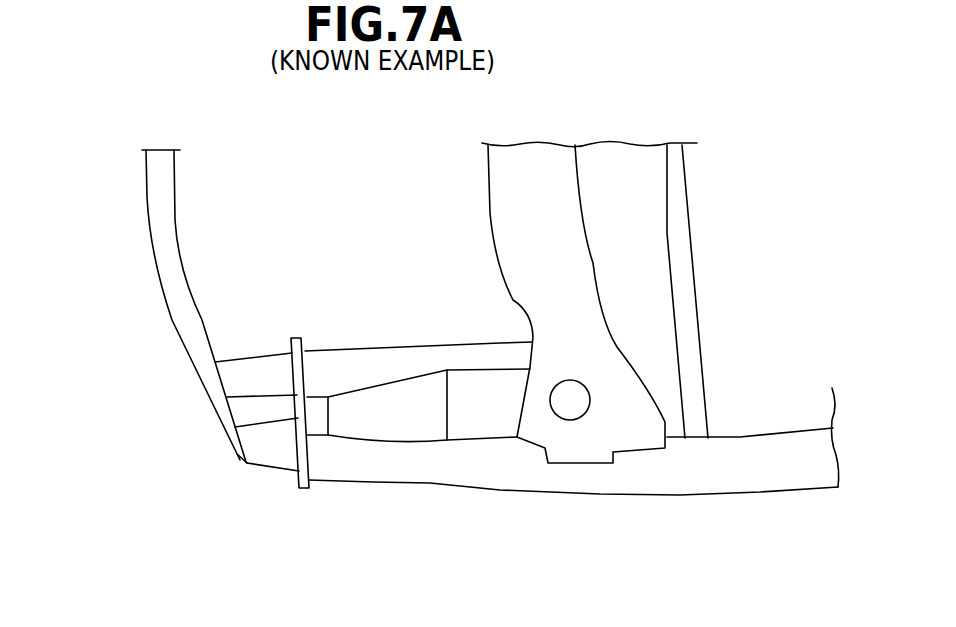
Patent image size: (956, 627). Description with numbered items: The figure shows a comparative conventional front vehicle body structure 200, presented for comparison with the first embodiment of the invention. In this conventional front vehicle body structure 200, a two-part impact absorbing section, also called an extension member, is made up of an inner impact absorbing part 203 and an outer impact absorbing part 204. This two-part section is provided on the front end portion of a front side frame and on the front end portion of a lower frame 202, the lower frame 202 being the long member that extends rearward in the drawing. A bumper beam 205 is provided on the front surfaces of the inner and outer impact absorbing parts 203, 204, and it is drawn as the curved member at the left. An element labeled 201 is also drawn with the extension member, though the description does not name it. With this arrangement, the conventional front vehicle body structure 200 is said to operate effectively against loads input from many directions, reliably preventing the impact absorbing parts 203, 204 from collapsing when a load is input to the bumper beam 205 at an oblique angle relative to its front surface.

The conventional front vehicle body structure 200 is at (172, 65).
The connector housing 201 is at (352, 345).
The lower frame 202 is at (375, 483).
The inner impact absorbing part 203 is at (228, 378).
The outer impact absorbing part 204 is at (248, 445).
The bumper beam 205 is at (178, 347).